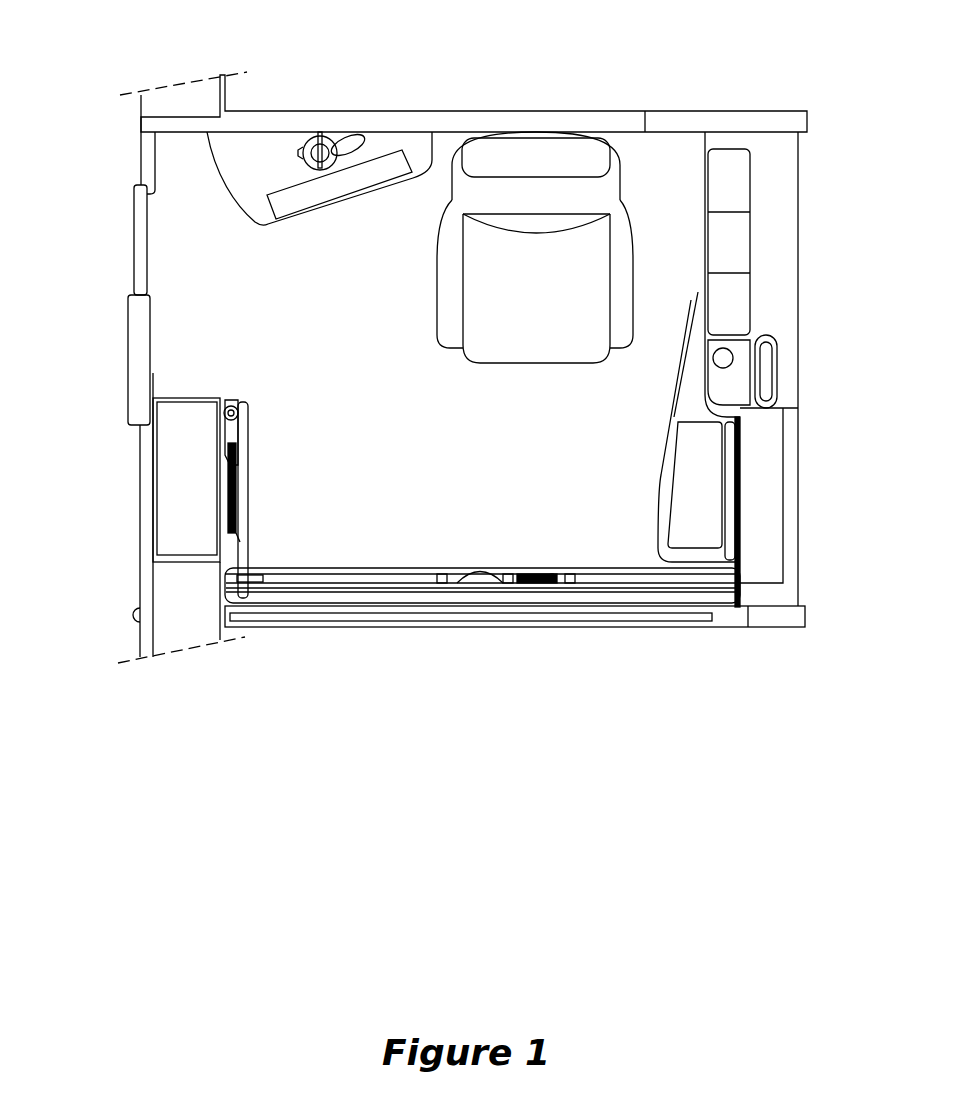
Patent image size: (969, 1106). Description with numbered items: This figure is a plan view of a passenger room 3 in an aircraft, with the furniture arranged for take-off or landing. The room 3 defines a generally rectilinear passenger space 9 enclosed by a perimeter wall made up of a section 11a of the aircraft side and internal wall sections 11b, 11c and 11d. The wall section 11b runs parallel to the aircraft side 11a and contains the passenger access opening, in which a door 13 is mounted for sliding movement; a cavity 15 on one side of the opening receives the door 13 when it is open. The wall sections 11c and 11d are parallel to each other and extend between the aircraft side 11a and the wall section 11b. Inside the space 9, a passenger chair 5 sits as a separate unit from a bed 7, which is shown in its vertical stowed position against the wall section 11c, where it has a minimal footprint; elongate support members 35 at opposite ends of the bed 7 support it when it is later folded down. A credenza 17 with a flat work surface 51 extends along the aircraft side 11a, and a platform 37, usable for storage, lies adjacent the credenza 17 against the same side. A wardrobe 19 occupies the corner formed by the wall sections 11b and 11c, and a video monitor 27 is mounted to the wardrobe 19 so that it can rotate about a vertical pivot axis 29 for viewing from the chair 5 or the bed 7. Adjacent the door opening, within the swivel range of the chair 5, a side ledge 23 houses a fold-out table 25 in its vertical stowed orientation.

The passenger room 3 is at (832, 86).
The passenger chair 5 is at (548, 297).
The bed 7 is at (383, 594).
The passenger space 9 is at (172, 182).
The section of a side of the aircraft 11a is at (828, 315).
The wall section 11b is at (102, 393).
The wall section 11c is at (486, 672).
The wall section 11d is at (485, 78).
The door 13 is at (141, 235).
The cavity 15 is at (141, 327).
The credenza 17 is at (780, 180).
The wardrobe 19 is at (188, 478).
The side ledge 23 is at (262, 153).
The fold-out table 25 is at (377, 175).
The video monitor 27 is at (253, 500).
The vertical pivot axis 29 is at (229, 403).
The support members 35 is at (227, 513).
The platform 37 is at (695, 492).
The flat work surface 51 is at (790, 262).